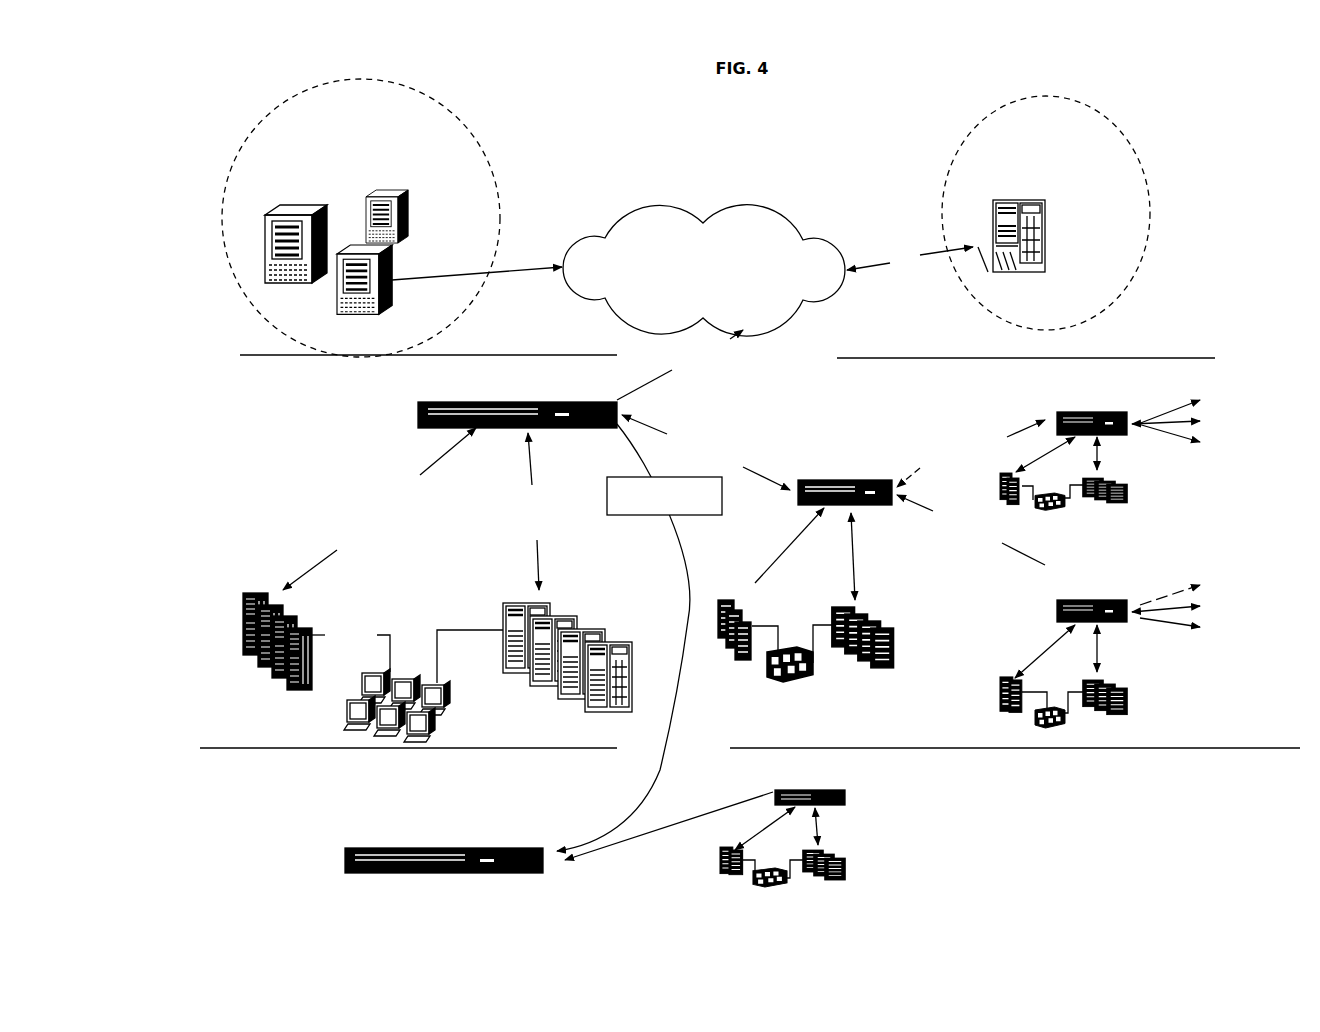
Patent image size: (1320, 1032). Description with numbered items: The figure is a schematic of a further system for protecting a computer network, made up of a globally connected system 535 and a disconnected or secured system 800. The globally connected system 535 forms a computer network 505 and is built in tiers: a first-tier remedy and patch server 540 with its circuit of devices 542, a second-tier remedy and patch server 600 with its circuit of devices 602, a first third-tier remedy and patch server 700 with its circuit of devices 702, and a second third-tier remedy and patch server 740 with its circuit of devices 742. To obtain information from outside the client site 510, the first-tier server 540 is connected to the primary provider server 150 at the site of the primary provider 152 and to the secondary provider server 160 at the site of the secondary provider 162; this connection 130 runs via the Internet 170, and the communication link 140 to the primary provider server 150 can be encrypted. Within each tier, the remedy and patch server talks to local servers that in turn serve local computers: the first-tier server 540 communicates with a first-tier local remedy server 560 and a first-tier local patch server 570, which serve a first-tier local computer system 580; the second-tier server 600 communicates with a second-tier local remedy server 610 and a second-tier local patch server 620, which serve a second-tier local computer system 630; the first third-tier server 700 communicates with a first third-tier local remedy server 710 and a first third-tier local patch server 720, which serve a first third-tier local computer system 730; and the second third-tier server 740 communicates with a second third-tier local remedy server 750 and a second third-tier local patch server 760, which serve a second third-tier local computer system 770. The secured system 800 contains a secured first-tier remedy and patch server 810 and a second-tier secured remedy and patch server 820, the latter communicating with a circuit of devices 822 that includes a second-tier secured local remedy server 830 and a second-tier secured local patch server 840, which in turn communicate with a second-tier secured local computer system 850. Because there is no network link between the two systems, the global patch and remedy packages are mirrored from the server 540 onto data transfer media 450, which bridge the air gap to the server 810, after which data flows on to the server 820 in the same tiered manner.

The connection 130 is at (766, 360).
The communication link 140 is at (954, 276).
The primary provider server 150 is at (973, 236).
The primary provider 152 is at (1140, 160).
The secondary provider server 160 is at (413, 271).
The secondary provider 162 is at (492, 167).
The Internet 170 is at (704, 270).
The data transfer media 450 is at (639, 637).
The computer network 505 is at (1263, 412).
The client site 510 is at (912, 400).
The globally connected system 535 is at (428, 375).
The first-tier remedy and patch server 540 is at (545, 427).
The circuit of devices 542 is at (364, 464).
The first-tier local remedy server 560 is at (567, 626).
The first-tier local patch server 570 is at (278, 620).
The first-tier local computer system 580 is at (423, 686).
The second-tier remedy and patch server 600 is at (817, 519).
The circuit of devices 602 is at (862, 663).
The second-tier local remedy server 610 is at (885, 556).
The second-tier local patch server 620 is at (751, 627).
The second-tier local computer system 630 is at (799, 666).
The first third-tier remedy and patch server 700 is at (1067, 427).
The circuit of devices 702 is at (1225, 433).
The first third-tier local remedy server 710 is at (1136, 493).
The first third-tier local patch server 720 is at (939, 489).
The first third-tier local computer system 730 is at (1041, 507).
The second third-tier remedy and patch server 740 is at (1071, 626).
The circuit of devices 742 is at (1205, 642).
The second third-tier local remedy server 750 is at (1141, 697).
The second third-tier local patch server 760 is at (988, 626).
The second third-tier local computer system 770 is at (1067, 710).
The disconnected system 800 is at (408, 769).
The secured first-tier remedy and patch server 810 is at (444, 838).
The second-tier secured remedy and patch server 820 is at (708, 812).
The circuit of devices 822 is at (1015, 819).
The second-tier secured local remedy server 830 is at (857, 865).
The second-tier secured local patch server 840 is at (703, 861).
The second-tier secured local computer system 850 is at (778, 890).